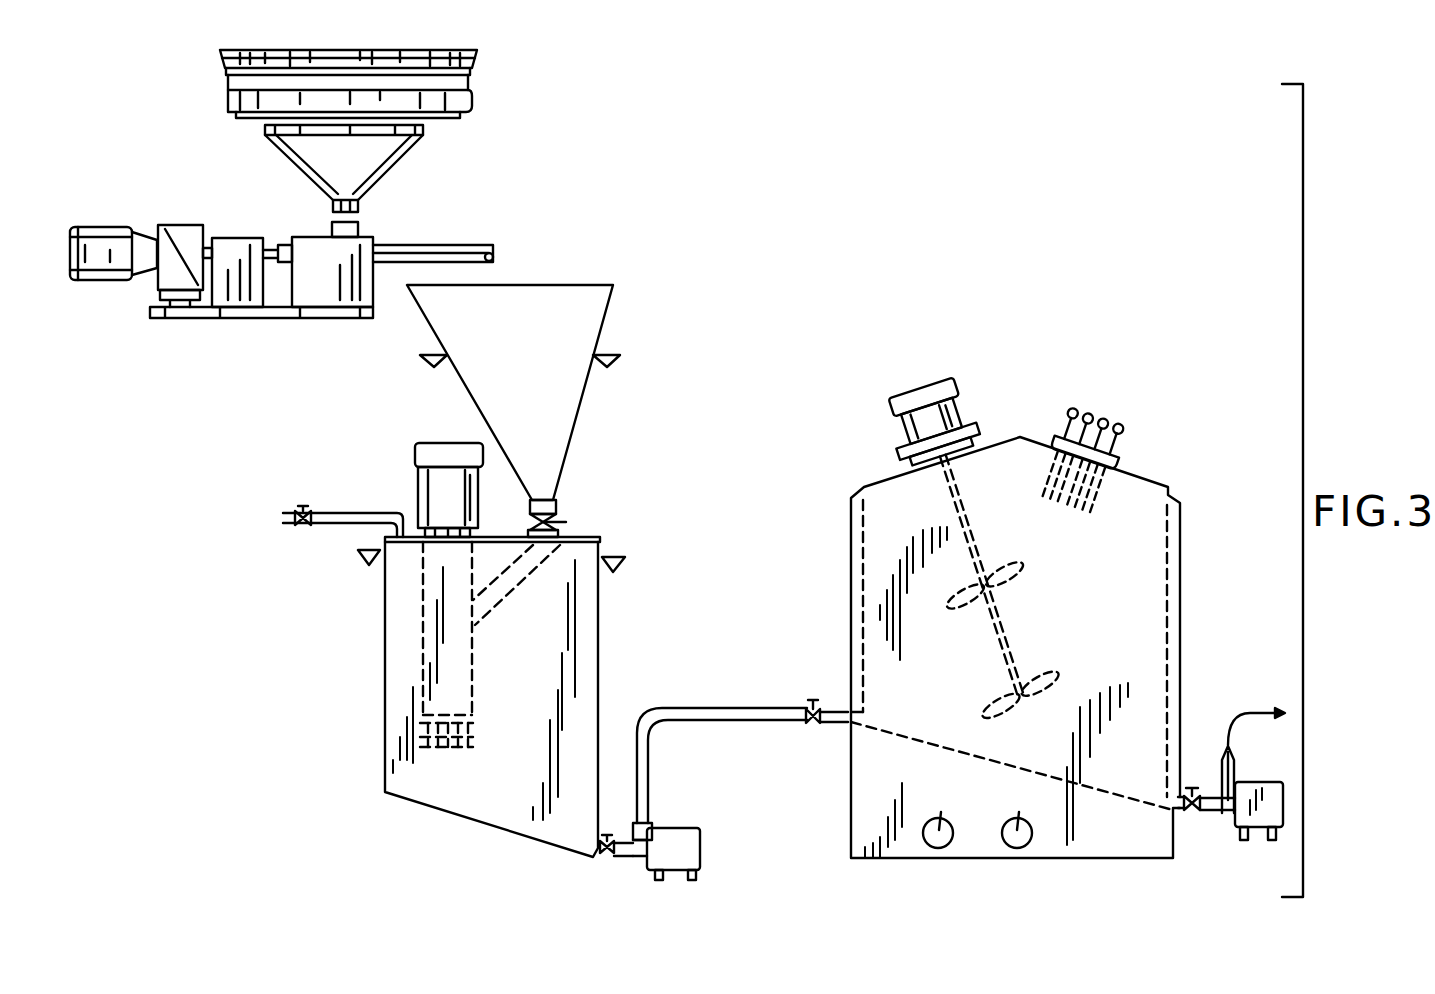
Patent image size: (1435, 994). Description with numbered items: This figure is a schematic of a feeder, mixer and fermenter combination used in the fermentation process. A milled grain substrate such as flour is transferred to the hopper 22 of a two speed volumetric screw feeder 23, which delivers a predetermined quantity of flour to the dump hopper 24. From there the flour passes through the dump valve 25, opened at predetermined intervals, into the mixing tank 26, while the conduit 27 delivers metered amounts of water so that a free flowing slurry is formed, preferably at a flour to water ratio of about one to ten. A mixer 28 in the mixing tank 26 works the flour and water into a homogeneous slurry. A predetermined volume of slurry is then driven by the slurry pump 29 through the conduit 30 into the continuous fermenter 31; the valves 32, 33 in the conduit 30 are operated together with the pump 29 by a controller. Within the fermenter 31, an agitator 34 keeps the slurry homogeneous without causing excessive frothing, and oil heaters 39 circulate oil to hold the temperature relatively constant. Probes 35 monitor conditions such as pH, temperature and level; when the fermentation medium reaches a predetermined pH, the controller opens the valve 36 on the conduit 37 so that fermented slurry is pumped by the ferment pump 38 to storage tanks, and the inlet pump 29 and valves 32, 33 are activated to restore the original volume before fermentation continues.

The hopper 22 is at (358, 157).
The two speed volumetric screw feeder 23 is at (334, 291).
The dump hopper 24 is at (585, 317).
The dump valve 25 is at (562, 507).
The mixing tank 26 is at (582, 637).
The conduit 27 is at (345, 513).
The mixer 28 is at (425, 497).
The slurry pump 29 is at (690, 847).
The conduit 30 is at (682, 708).
The continuous fermenter 31 is at (1180, 556).
The valve 32 is at (610, 842).
The valve 33 is at (813, 700).
The agitator 34 is at (955, 398).
The probes 35 is at (1052, 421).
The valve 36 is at (1192, 790).
The conduit 37 is at (1212, 813).
The ferment pump 38 is at (1263, 833).
The oil heaters 39 is at (975, 811).